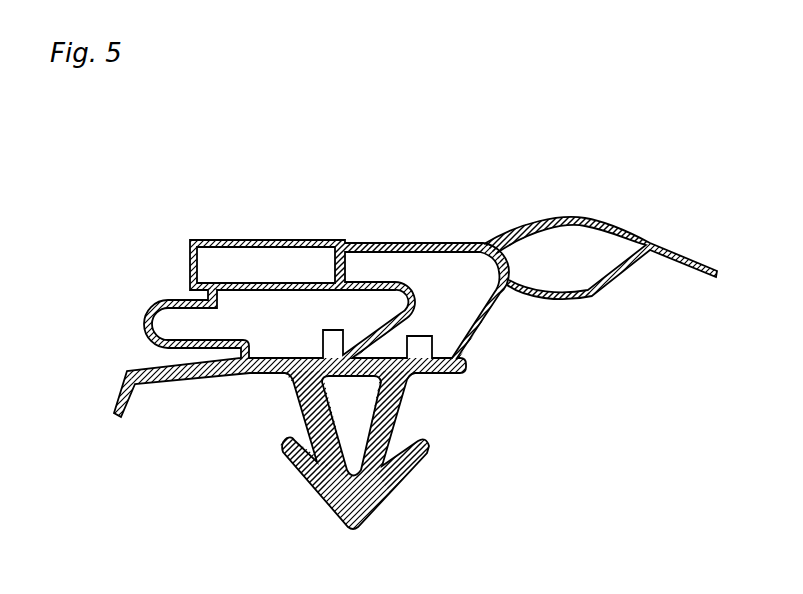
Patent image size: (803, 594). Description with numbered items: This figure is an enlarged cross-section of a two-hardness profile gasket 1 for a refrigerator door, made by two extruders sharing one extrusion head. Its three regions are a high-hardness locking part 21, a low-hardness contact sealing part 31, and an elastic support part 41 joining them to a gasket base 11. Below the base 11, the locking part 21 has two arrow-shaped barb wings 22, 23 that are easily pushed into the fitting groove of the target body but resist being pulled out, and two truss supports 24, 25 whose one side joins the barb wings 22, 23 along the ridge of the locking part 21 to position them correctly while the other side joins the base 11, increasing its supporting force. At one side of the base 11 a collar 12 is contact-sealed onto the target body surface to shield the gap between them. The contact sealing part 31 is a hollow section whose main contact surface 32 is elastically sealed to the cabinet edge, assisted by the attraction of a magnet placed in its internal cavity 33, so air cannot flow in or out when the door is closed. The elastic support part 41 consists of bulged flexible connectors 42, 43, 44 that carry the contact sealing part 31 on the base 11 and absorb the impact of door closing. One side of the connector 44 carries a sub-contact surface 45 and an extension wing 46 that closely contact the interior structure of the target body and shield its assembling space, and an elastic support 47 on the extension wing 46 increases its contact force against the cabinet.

The two-hardness profile gasket 1 is at (136, 226).
The gasket base 11 is at (220, 389).
The collar 12 is at (118, 414).
The locking part 21 is at (313, 510).
The barb wing 22 is at (289, 460).
The barb wing 23 is at (420, 455).
The truss support 24 is at (307, 406).
The truss support 25 is at (393, 410).
The contact sealing part 31 is at (245, 222).
The main contact surface 32 is at (306, 240).
The internal cavity 33 is at (199, 258).
The elastic support part 41 is at (489, 350).
The bulged flexible connector 42 is at (146, 324).
The bulged flexible connector 43 is at (416, 296).
The bulged flexible connector 44 is at (498, 296).
The sub-contact surface 45 is at (428, 243).
The extension wing 46 is at (578, 222).
The elastic support 47 is at (574, 298).